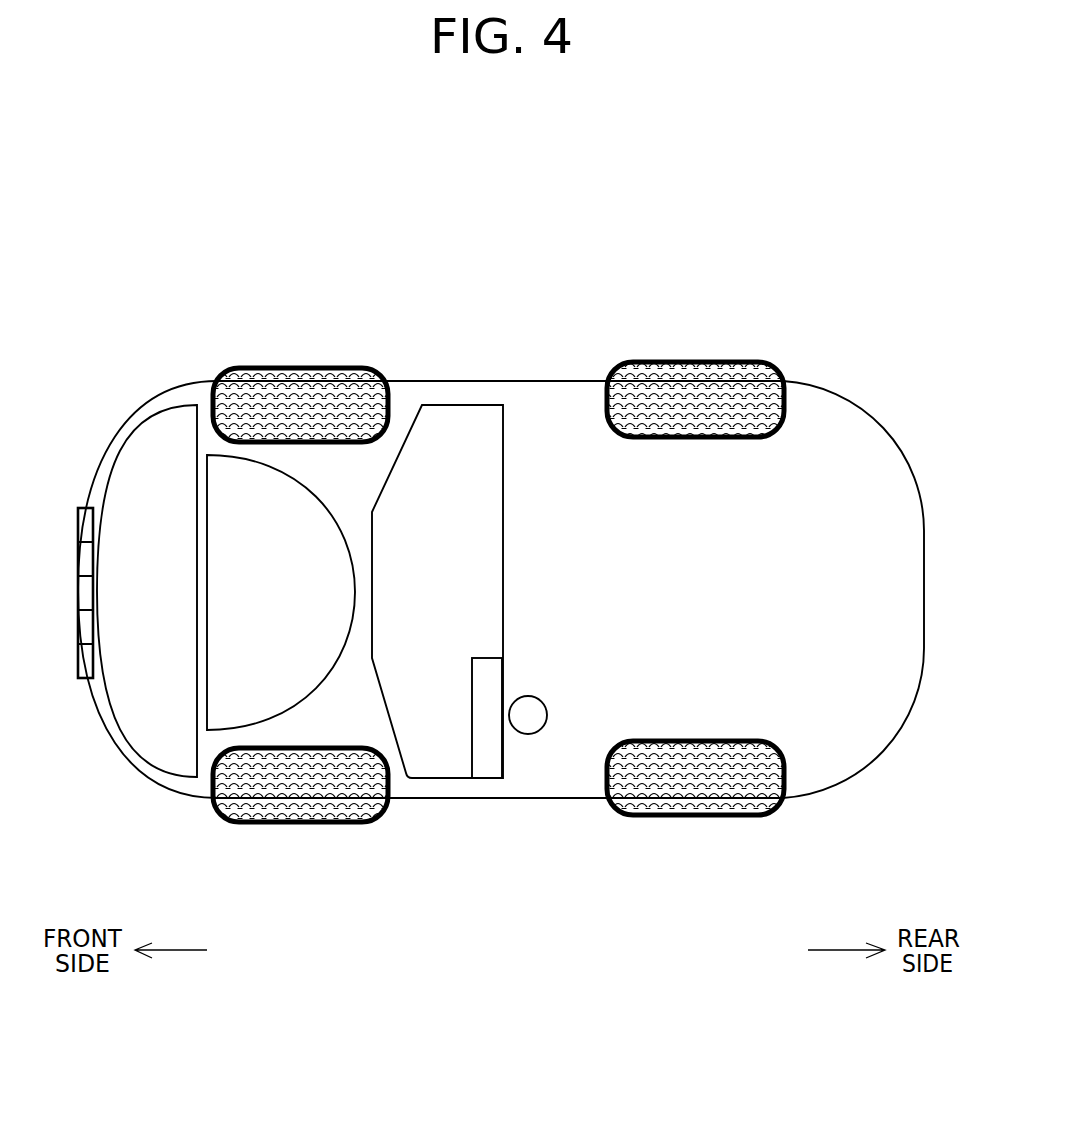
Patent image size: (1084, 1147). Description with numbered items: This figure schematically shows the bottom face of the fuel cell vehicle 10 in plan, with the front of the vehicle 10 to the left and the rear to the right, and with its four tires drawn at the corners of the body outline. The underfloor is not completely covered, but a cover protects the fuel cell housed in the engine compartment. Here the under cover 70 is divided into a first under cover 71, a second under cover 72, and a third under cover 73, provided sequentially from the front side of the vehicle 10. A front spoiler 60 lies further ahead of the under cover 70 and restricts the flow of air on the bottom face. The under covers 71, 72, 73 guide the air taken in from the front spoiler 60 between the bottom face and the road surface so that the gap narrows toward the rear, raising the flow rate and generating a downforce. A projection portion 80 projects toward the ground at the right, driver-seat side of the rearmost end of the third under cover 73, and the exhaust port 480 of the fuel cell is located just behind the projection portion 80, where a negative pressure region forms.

The vehicle 10 is at (808, 370).
The front spoiler 60 is at (78, 533).
The under cover 70 is at (493, 272).
The first under cover 71 is at (167, 440).
The second under cover 72 is at (262, 492).
The third under cover 73 is at (462, 423).
The projection portion 80 is at (483, 765).
The exhaust port 480 is at (528, 734).